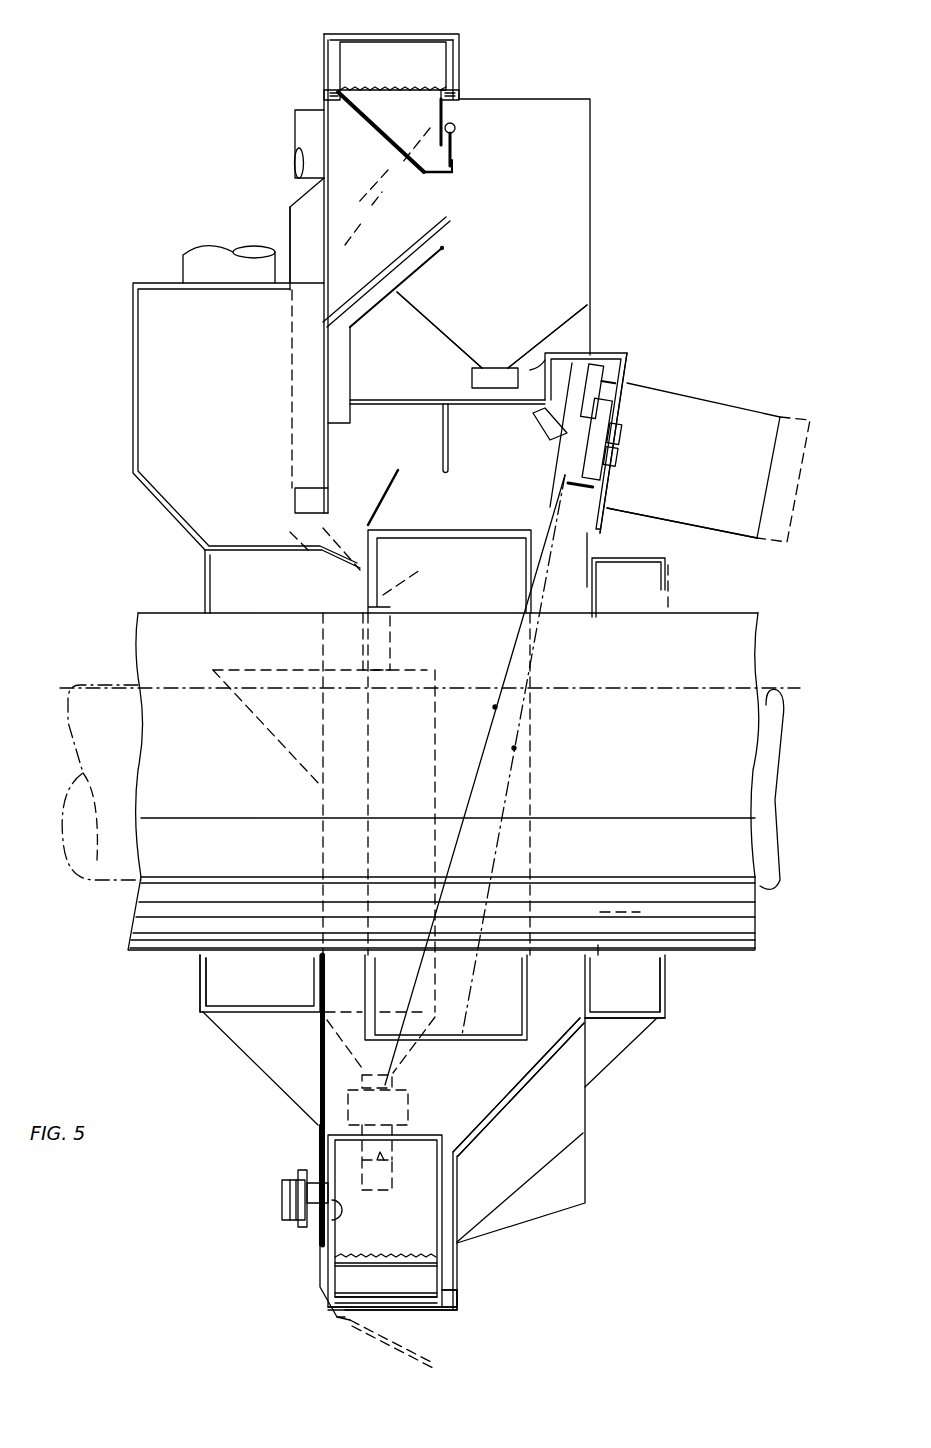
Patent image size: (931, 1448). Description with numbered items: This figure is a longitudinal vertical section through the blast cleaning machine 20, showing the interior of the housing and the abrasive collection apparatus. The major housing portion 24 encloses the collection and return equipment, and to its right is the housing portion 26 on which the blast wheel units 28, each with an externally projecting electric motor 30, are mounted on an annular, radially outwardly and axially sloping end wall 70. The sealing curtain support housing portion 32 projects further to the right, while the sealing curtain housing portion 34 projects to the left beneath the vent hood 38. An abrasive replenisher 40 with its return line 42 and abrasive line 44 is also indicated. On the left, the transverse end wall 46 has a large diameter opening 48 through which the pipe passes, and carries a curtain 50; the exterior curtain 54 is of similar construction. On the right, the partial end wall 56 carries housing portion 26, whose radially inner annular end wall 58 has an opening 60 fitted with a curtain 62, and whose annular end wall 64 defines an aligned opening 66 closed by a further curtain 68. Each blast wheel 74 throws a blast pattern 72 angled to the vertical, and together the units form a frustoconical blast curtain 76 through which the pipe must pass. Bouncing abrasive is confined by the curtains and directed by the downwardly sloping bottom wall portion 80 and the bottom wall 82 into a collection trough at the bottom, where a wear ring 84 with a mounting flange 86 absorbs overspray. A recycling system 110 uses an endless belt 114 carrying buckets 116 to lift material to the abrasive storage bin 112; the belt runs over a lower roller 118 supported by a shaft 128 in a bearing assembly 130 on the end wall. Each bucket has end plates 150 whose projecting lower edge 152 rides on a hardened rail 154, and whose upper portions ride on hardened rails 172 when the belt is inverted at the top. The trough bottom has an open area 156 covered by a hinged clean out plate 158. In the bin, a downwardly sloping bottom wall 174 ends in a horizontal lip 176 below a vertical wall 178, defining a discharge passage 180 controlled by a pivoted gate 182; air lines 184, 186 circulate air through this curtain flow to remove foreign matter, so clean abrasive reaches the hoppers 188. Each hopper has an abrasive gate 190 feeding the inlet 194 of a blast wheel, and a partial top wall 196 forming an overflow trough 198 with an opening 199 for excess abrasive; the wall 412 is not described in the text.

The cleaning machine 20 is at (690, 1068).
The major housing portion 24 is at (458, 1285).
The housing portion 26 is at (610, 350).
The blast wheel unit 28 is at (750, 382).
The electric motor 30 is at (757, 520).
The sealing curtain support housing portion 32 is at (635, 557).
The sealing curtain housing portion 34 is at (255, 548).
The vent hood 38 is at (133, 452).
The abrasive replenisher 40 is at (332, 805).
The return line 42 is at (390, 1158).
The abrasive line 44 is at (392, 588).
The transverse end wall 46 is at (320, 1094).
The large diameter opening 48 is at (338, 947).
The curtain 50 is at (318, 972).
The exterior curtain 54 is at (200, 985).
The partial end wall 56 is at (460, 80).
The radially inner annular end wall 58 is at (585, 1010).
The opening 60 is at (598, 945).
The curtain 62 is at (602, 914).
The annular end wall 64 is at (648, 1020).
The opening 66 is at (662, 985).
The curtain 68 is at (662, 1006).
The sloping end wall 70 is at (628, 372).
The blast pattern 72 is at (533, 745).
The blast wheel 74 is at (545, 366).
The frustoconical blast curtain 76 is at (486, 758).
The downwardly sloping bottom wall portion 80 is at (522, 1094).
The bottom wall 82 is at (238, 1040).
The wear ring 84 is at (490, 1036).
The mounting flange 86 is at (375, 992).
The recycling system 110 is at (318, 1283).
The abrasive storage bin 112 is at (590, 275).
The endless belt 114 is at (380, 112).
The bucket 116 is at (377, 64).
The lower roller 118 is at (428, 1136).
The shaft 128 is at (338, 1236).
The bearing assembly 130 is at (282, 1165).
The end plate 150 is at (330, 62).
The projecting lower edge 152 is at (452, 1303).
The hardened rail 154 is at (427, 1303).
The open area 156 is at (400, 1307).
The clean out plate 158 is at (353, 1320).
The hardened rail 172 is at (325, 92).
The downwardly sloping bottom wall 174 is at (398, 168).
The horizontal lip 176 is at (452, 174).
The vertical wall 178 is at (456, 130).
The discharge passage 180 is at (437, 170).
The gate 182 is at (453, 160).
The air line 184 is at (294, 165).
The air line 186 is at (238, 245).
The hopper 188 is at (466, 346).
The abrasive gate 190 is at (472, 380).
The inlet 194 is at (540, 434).
The partial top wall 196 is at (410, 286).
The overflow trough 198 is at (388, 260).
The opening 199 is at (446, 248).
The wall 412 is at (357, 197).